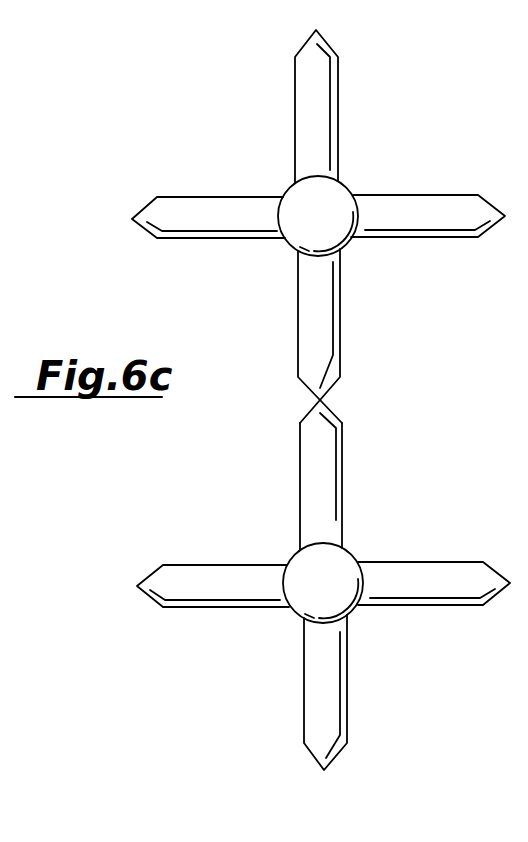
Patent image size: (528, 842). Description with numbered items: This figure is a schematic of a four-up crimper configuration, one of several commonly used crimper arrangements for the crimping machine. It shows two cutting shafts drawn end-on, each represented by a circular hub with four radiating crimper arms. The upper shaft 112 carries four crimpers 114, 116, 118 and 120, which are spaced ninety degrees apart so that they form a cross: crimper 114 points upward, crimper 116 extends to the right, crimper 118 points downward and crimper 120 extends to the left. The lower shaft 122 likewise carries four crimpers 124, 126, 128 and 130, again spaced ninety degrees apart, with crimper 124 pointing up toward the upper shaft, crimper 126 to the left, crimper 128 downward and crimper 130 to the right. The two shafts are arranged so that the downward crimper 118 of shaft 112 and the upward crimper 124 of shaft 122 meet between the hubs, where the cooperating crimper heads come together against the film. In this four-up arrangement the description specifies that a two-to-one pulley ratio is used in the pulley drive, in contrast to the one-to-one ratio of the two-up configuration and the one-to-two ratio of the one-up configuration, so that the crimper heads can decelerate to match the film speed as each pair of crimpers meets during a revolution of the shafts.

The shaft 112 is at (302, 193).
The crimper 114 is at (320, 73).
The crimper 116 is at (375, 232).
The crimper 118 is at (306, 264).
The crimper 120 is at (175, 210).
The shaft 122 is at (303, 548).
The crimper 124 is at (328, 440).
The crimper 126 is at (185, 577).
The crimper 128 is at (315, 632).
The crimper 130 is at (380, 600).